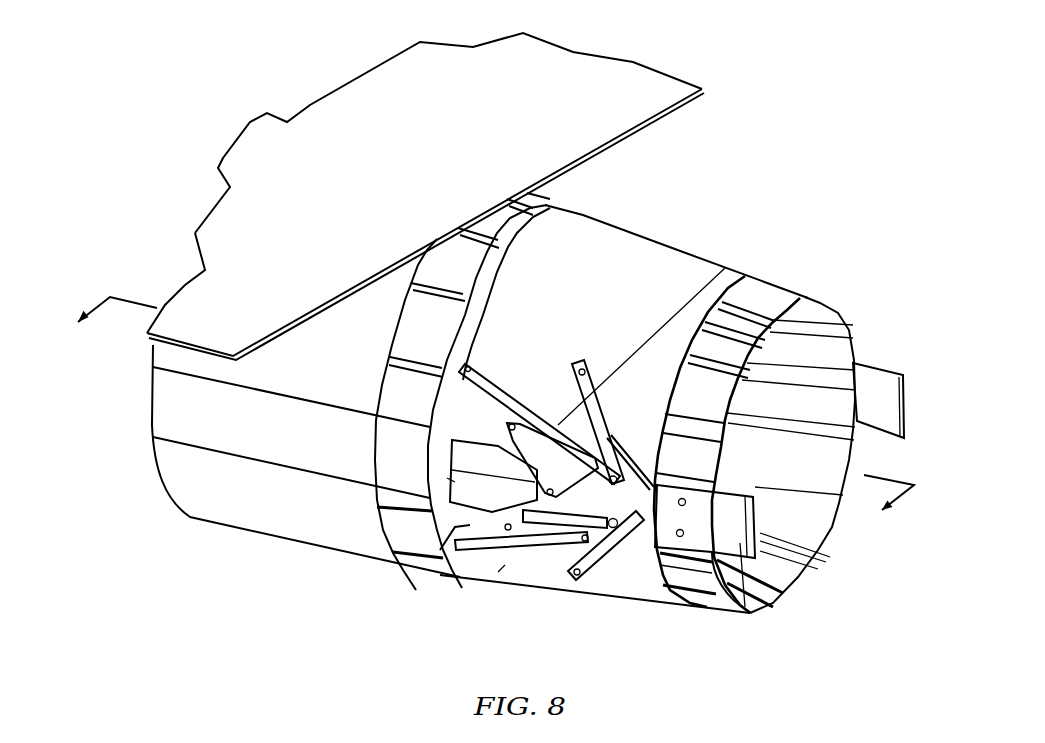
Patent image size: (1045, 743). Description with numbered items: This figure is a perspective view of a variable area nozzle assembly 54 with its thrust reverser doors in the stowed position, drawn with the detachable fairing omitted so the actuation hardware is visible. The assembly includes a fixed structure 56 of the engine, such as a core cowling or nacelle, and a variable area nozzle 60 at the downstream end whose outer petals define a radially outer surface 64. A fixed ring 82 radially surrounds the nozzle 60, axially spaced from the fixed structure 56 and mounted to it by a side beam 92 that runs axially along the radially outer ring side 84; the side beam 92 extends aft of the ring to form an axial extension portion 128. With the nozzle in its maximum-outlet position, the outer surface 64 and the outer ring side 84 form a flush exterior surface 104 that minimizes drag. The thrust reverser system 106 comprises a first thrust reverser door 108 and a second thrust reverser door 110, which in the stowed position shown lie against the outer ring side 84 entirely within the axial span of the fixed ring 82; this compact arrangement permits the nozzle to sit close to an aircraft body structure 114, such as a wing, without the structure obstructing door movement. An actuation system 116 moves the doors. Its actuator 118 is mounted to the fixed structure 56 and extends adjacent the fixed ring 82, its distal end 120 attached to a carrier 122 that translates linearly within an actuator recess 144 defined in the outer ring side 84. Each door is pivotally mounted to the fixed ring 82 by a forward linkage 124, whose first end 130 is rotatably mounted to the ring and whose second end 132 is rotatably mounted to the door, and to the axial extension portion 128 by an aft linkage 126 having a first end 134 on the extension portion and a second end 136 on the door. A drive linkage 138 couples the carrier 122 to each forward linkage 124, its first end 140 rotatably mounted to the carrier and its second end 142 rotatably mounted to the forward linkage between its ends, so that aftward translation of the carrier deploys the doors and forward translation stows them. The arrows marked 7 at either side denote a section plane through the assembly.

The section line 7- 7 is at (486, 417).
The variable area nozzle assembly 54 is at (778, 112).
The fixed structure 56 is at (335, 535).
The variable area nozzle 60 is at (842, 545).
The radially outer surface 64 is at (530, 202).
The fixed ring 82 is at (667, 613).
The radially outer ring side 84 is at (740, 278).
The side beam 92 is at (397, 445).
The exterior surface 104 is at (800, 277).
The thrust reverser system 106 is at (713, 232).
The first thrust reverser door 108 is at (602, 233).
The second thrust reverser door 110 is at (498, 572).
The aircraft body structure 114 is at (625, 88).
The actuation system 116 is at (467, 522).
The actuator 118 is at (477, 473).
The distal end 120 is at (612, 549).
The carrier 122 is at (497, 413).
The forward linkage 124 is at (538, 413).
The aft linkage 126 is at (640, 492).
The axial extension portion 128 is at (760, 613).
The first end 130 is at (655, 486).
The second end 132 is at (474, 358).
The first end 134 is at (695, 505).
The second end 136 is at (600, 362).
The drive linkage 138 is at (547, 523).
The first end 140 is at (520, 545).
The second end 142 is at (587, 550).
The actuator recess 144 is at (445, 482).